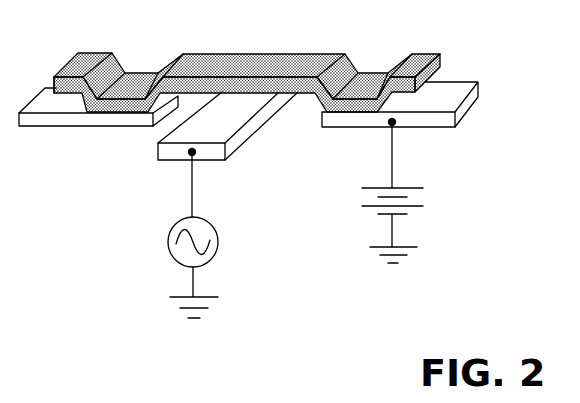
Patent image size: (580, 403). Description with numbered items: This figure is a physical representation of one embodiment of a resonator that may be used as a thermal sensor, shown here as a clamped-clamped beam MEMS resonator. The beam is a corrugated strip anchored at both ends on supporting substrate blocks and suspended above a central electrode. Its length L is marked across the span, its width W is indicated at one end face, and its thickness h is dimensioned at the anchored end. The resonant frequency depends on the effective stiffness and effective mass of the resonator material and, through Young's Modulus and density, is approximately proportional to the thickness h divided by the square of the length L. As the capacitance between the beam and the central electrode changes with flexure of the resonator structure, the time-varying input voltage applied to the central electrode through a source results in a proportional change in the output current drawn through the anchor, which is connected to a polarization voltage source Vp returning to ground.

The beam length L is at (271, 67).
The beam width W is at (455, 57).
The beam thickness h is at (70, 52).
The polarization voltage source Vp is at (375, 225).